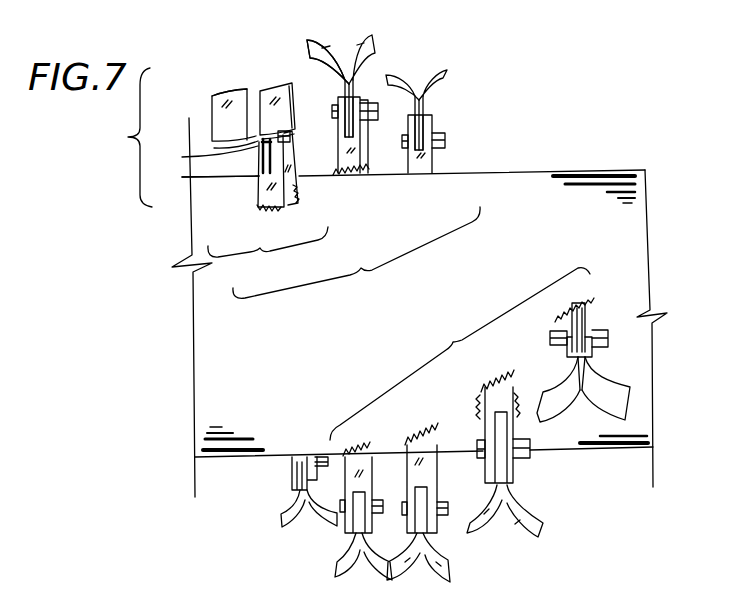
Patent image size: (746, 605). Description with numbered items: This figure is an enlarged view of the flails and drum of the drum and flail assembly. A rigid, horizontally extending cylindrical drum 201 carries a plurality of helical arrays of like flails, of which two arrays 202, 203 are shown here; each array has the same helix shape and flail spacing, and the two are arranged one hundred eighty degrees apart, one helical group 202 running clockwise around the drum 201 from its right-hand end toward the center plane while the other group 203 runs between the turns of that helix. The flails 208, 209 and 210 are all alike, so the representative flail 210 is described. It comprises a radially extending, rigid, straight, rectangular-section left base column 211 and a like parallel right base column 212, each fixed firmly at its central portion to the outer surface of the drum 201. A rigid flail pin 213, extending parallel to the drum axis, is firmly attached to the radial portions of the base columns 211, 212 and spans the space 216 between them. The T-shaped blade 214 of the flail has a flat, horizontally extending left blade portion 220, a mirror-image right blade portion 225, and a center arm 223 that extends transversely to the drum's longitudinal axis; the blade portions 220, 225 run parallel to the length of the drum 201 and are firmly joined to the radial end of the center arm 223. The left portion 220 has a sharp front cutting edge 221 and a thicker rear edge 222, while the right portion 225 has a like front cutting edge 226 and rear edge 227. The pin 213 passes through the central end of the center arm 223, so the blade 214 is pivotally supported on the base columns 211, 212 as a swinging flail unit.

The cylindrical drum 201 is at (202, 342).
The helical array of flails 202 is at (356, 252).
The helical array of flails 203 is at (460, 354).
The flail 208 is at (418, 163).
The flail 209 is at (350, 163).
The flail 210 is at (268, 253).
The left base column 211 is at (258, 206).
The right base column 212 is at (273, 202).
The flail pin 213 is at (289, 143).
The T-shaped blade 214 is at (128, 137).
The space between base columns 216 is at (265, 171).
The left blade portion 220 is at (207, 108).
The front cutting edge 221 is at (247, 94).
The rear edge 222 is at (202, 158).
The center arm 223 is at (203, 179).
The right blade portion 225 is at (308, 43).
The front cutting edge 226 is at (270, 92).
The rear edge 227 is at (292, 97).